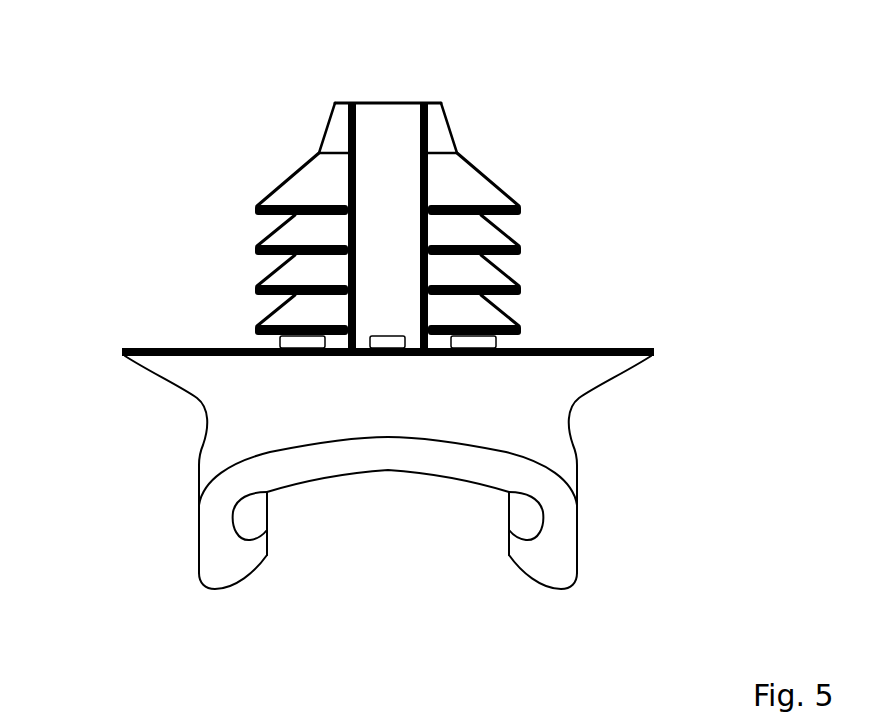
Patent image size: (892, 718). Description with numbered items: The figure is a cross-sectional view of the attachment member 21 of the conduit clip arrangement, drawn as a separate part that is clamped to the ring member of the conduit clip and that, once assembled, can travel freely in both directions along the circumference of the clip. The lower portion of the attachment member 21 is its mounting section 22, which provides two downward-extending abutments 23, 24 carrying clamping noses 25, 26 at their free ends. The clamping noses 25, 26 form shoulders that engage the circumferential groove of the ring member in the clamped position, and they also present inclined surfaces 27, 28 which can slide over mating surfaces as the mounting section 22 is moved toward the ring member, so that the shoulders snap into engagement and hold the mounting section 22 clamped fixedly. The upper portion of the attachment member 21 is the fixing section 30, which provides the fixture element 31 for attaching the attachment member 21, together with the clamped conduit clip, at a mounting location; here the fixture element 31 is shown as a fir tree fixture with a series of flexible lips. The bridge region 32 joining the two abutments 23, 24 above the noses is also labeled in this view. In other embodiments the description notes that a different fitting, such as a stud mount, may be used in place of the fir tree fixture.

The attachment member 21 is at (572, 169).
The mounting section 22 is at (550, 385).
The abutment 23 is at (558, 517).
The abutment 24 is at (212, 520).
The clamping nose 25 is at (550, 570).
The clamping nose 26 is at (212, 570).
The inclined surface 27 is at (512, 557).
The inclined surface 28 is at (263, 556).
The fixing section 30 is at (324, 103).
The fixture element 31 is at (318, 187).
The stud 32 is at (377, 477).